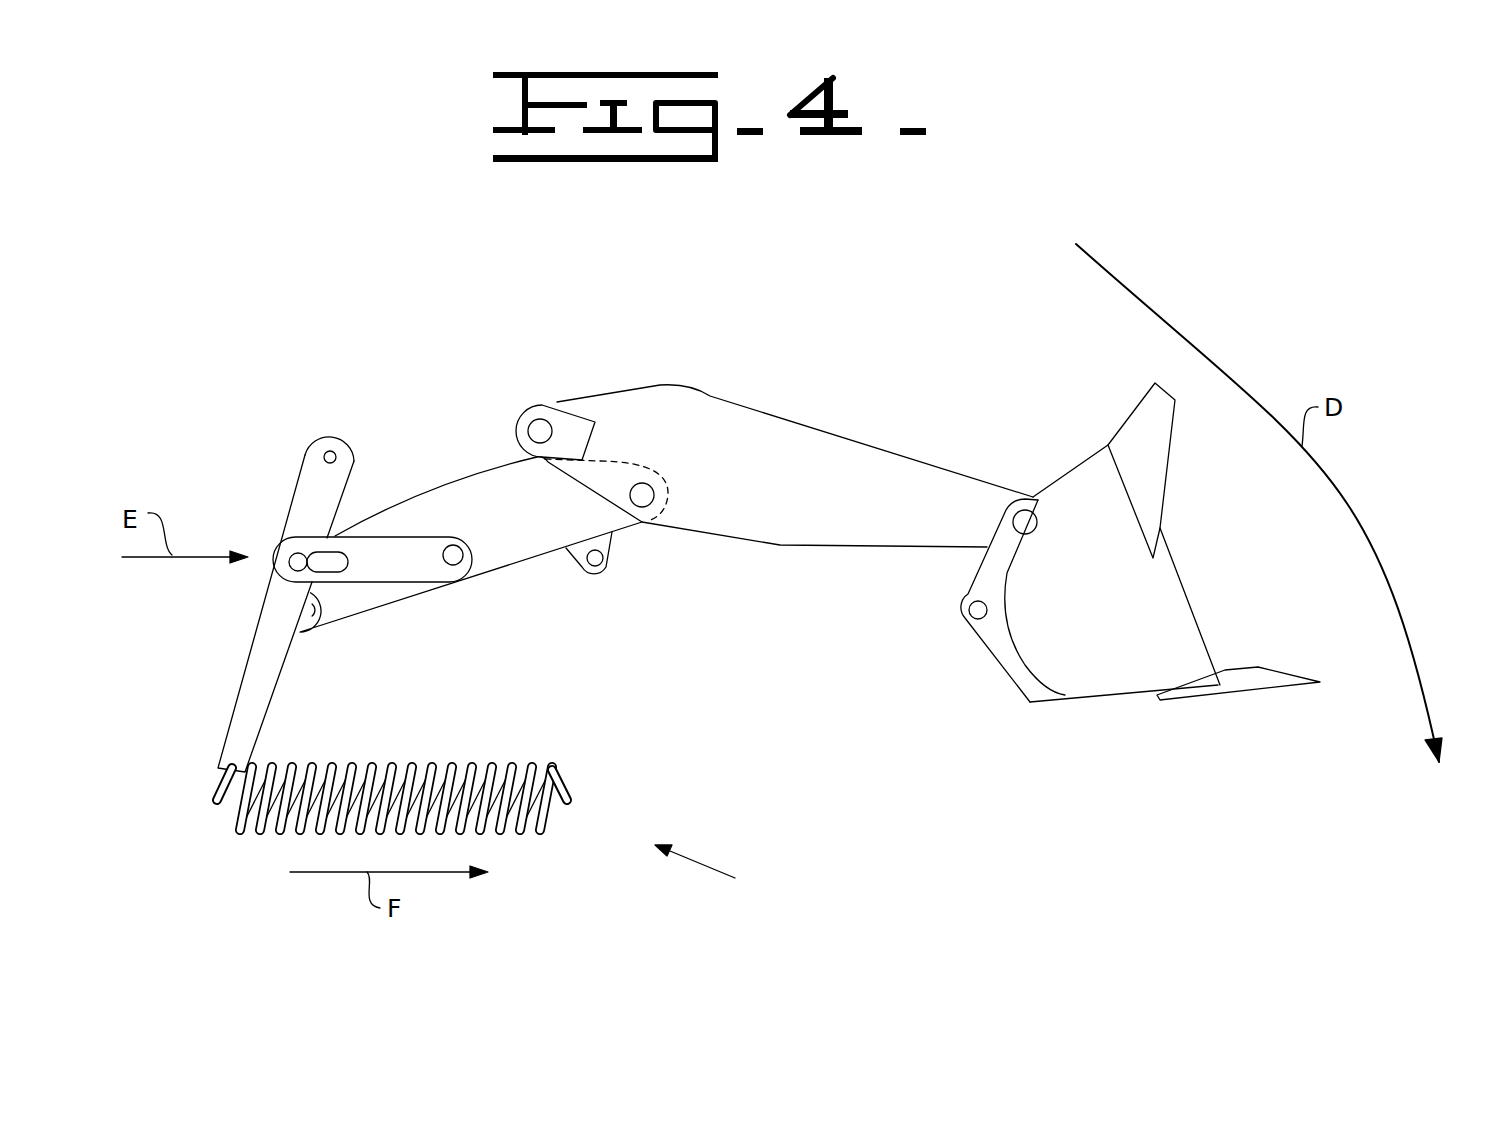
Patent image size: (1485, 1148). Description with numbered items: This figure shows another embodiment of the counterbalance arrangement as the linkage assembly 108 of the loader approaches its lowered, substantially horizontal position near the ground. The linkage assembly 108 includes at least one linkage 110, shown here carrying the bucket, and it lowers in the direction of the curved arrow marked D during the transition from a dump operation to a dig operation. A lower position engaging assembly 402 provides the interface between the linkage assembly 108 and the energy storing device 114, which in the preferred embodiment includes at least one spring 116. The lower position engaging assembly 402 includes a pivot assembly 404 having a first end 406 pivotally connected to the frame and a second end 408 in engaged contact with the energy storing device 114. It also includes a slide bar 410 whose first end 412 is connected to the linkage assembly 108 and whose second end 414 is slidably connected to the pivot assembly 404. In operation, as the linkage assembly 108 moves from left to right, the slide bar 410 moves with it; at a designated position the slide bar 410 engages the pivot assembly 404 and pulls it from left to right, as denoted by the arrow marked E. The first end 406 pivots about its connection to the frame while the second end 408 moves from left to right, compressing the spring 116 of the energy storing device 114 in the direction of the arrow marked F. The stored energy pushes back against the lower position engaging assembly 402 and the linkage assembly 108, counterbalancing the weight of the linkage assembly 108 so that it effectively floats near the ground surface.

The linkage assembly 108 is at (405, 272).
The linkage 110 is at (510, 470).
The lower position engaging assembly 402 is at (207, 373).
The pivot assembly 404 is at (277, 692).
The first end 406 is at (307, 450).
The second end 408 is at (218, 768).
The slide bar 410 is at (382, 537).
The first end 412 is at (470, 557).
The second end 414 is at (275, 560).
The spring 116 is at (568, 787).
The energy storing device 114 is at (726, 874).